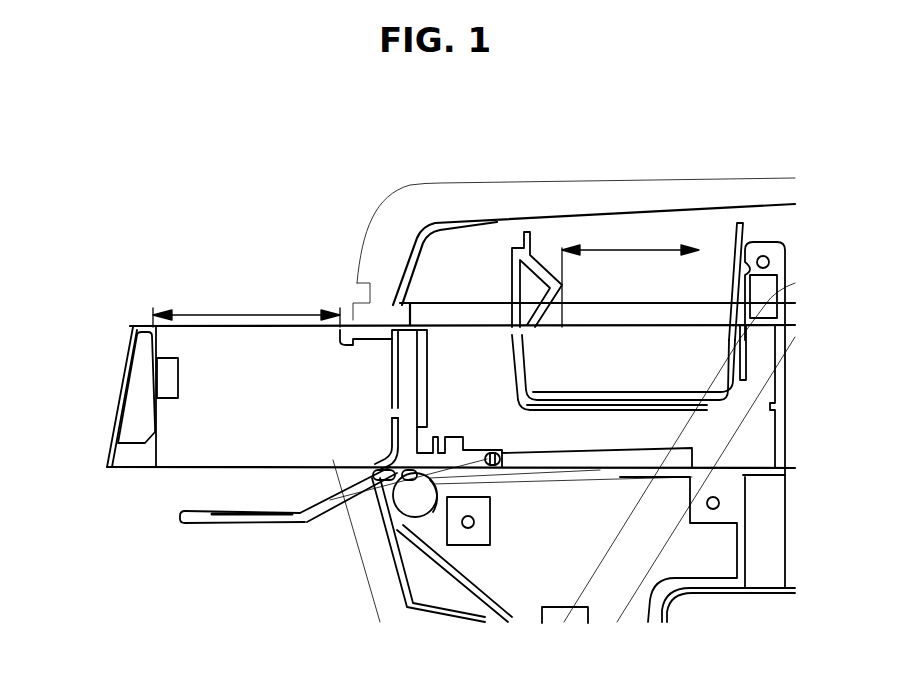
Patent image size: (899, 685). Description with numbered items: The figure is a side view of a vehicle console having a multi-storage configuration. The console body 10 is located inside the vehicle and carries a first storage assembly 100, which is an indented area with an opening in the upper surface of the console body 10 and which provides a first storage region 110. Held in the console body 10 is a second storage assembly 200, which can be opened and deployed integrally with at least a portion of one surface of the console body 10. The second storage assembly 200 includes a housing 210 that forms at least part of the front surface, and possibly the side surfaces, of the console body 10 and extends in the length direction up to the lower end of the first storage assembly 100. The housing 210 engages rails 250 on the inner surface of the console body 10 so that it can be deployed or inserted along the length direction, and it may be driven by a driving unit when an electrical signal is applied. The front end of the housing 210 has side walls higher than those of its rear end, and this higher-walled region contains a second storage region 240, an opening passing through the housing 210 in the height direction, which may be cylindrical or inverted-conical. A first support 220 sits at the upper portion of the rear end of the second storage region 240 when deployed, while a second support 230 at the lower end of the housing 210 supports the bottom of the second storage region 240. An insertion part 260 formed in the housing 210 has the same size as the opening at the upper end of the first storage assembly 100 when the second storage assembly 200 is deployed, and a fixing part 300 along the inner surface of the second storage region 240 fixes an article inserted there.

The console body 10 is at (481, 154).
The first storage assembly 100 is at (597, 222).
The first storage region 110 is at (636, 250).
The second storage assembly 200 is at (186, 282).
The housing 210 is at (110, 452).
The first support 220 is at (366, 333).
The second support 230 is at (225, 525).
The second storage region 240 is at (212, 420).
The rails 250 is at (688, 457).
The insertion part 260 is at (252, 312).
The fixing part 300 is at (170, 378).